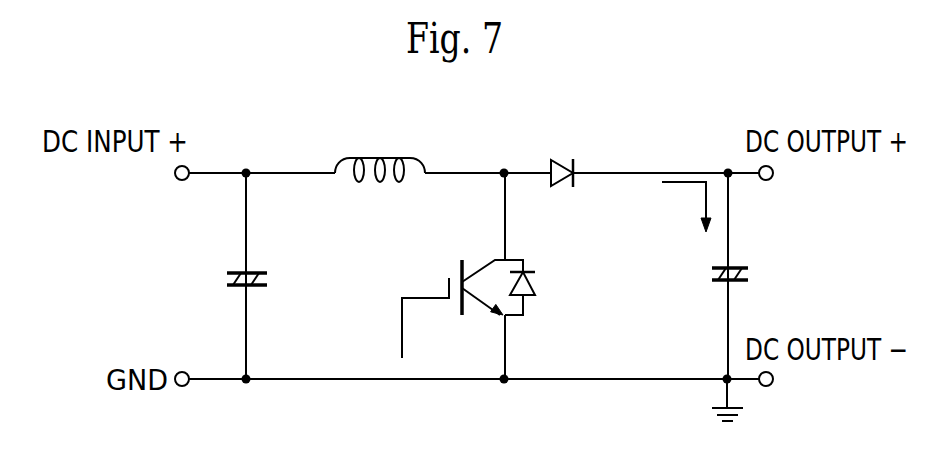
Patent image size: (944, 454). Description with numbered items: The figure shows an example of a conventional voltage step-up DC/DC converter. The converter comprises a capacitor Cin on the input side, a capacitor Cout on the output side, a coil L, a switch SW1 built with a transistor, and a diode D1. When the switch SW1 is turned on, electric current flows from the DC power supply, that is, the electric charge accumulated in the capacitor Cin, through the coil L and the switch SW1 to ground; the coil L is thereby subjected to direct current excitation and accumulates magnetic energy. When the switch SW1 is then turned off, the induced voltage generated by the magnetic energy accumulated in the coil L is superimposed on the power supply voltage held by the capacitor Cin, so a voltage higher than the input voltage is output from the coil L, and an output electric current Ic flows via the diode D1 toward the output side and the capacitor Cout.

The capacitor on the input side Cin is at (223, 276).
The coil L is at (380, 152).
The diode D1 is at (561, 158).
The switch SW1 is at (468, 276).
The output electric current Ic is at (686, 207).
The capacitor on the output side Cout is at (696, 276).